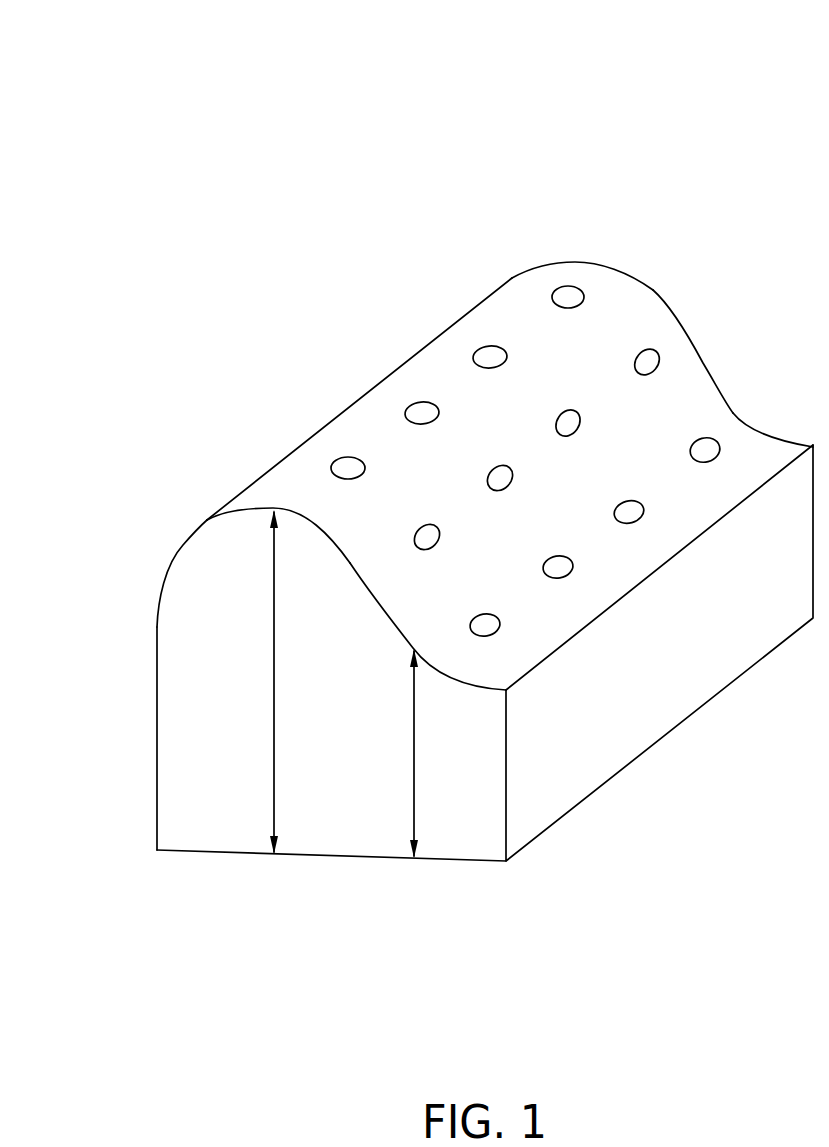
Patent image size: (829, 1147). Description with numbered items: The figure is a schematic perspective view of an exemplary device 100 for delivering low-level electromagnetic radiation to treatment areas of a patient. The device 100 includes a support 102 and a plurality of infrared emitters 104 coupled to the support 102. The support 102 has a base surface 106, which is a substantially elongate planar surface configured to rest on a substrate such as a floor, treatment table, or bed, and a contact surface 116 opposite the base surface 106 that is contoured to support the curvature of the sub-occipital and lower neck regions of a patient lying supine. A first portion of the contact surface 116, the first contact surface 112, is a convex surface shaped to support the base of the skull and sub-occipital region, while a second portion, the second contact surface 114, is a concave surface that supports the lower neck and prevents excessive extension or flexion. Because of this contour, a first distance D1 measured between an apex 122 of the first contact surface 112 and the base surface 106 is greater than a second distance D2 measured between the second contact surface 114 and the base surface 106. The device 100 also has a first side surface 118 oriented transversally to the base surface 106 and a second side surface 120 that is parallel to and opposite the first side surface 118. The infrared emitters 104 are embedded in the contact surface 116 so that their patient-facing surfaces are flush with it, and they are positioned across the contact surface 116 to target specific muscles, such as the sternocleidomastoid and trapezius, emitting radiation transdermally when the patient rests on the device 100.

The device 100 is at (697, 80).
The support 102 is at (142, 545).
The infrared emitters 104 is at (553, 296).
The base surface 106 is at (200, 880).
The first contact surface 112 is at (517, 283).
The second contact surface 114 is at (727, 428).
The contact surface 116 is at (682, 352).
The first side surface 118 is at (177, 720).
The second side surface 120 is at (573, 263).
The apex 122 is at (273, 507).
The first distance D1 is at (274, 703).
The second distance D2 is at (413, 752).